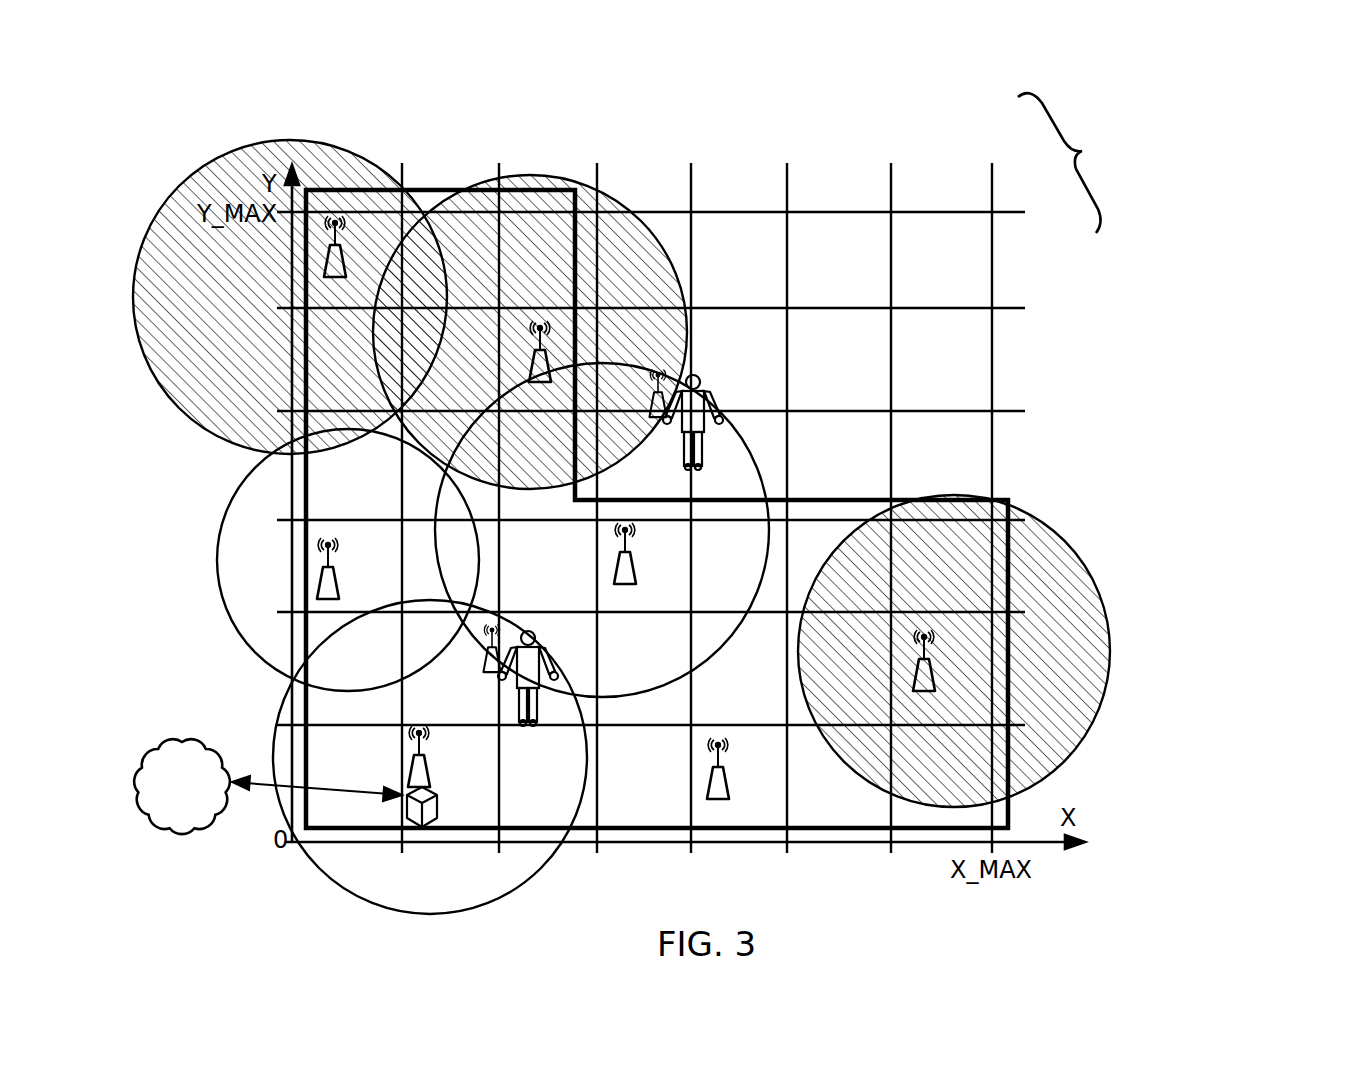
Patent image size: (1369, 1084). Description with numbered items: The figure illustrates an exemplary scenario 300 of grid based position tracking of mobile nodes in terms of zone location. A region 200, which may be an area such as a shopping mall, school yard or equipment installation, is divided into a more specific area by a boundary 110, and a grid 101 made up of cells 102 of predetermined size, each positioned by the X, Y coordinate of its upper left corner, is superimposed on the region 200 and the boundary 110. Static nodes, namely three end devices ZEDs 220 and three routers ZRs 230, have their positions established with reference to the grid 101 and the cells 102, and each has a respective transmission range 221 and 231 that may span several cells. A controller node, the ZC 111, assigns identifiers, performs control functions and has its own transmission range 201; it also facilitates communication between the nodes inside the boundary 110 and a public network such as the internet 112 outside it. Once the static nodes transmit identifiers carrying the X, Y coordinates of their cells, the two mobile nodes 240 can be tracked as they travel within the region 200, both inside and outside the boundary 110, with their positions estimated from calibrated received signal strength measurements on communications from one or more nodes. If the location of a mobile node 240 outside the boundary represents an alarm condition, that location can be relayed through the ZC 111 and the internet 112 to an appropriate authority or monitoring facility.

The region 200 is at (736, 136).
The exemplary scenario 300 is at (1281, 128).
The grid 101 is at (1078, 163).
The cell 102 is at (979, 360).
The boundary 110 is at (844, 498).
The ZC 111 is at (437, 806).
The internet 112 is at (124, 789).
The transmission range 201 is at (329, 875).
The ZED 220 is at (340, 232).
The transmission range 221 is at (168, 198).
The ZR 230 is at (332, 553).
The transmission range 231 is at (218, 530).
The mobile node 240 is at (701, 378).